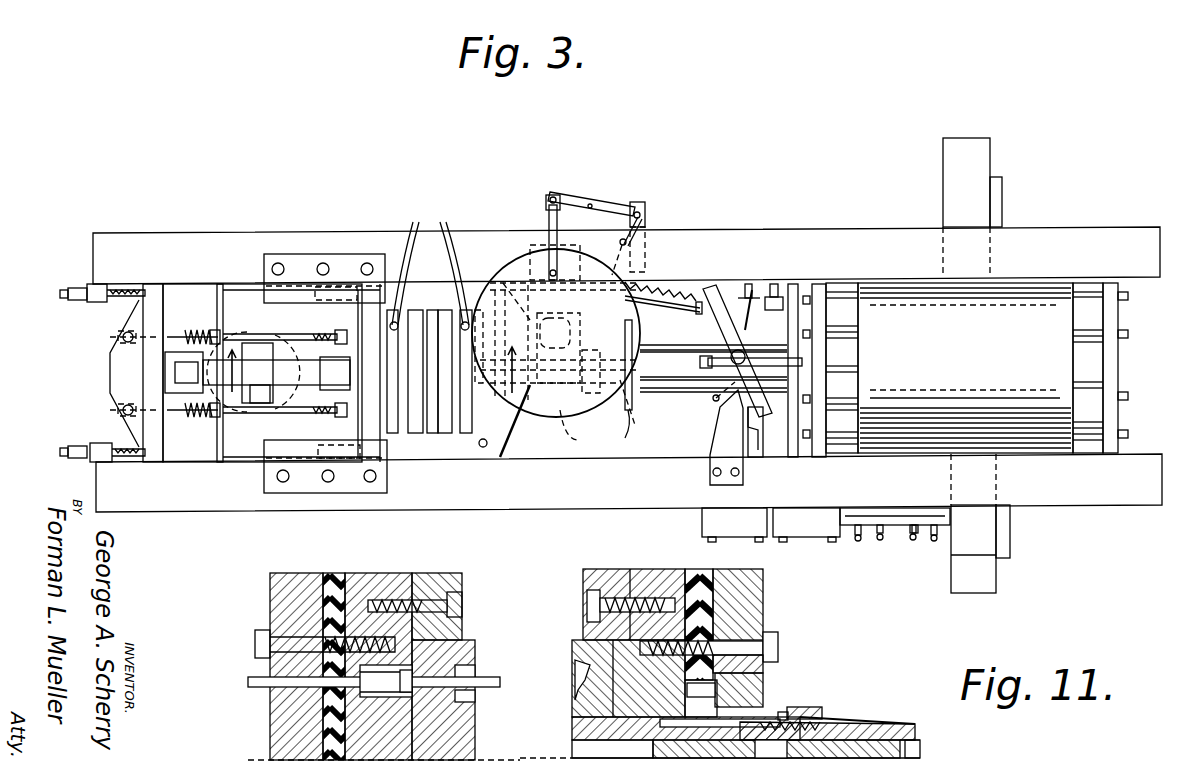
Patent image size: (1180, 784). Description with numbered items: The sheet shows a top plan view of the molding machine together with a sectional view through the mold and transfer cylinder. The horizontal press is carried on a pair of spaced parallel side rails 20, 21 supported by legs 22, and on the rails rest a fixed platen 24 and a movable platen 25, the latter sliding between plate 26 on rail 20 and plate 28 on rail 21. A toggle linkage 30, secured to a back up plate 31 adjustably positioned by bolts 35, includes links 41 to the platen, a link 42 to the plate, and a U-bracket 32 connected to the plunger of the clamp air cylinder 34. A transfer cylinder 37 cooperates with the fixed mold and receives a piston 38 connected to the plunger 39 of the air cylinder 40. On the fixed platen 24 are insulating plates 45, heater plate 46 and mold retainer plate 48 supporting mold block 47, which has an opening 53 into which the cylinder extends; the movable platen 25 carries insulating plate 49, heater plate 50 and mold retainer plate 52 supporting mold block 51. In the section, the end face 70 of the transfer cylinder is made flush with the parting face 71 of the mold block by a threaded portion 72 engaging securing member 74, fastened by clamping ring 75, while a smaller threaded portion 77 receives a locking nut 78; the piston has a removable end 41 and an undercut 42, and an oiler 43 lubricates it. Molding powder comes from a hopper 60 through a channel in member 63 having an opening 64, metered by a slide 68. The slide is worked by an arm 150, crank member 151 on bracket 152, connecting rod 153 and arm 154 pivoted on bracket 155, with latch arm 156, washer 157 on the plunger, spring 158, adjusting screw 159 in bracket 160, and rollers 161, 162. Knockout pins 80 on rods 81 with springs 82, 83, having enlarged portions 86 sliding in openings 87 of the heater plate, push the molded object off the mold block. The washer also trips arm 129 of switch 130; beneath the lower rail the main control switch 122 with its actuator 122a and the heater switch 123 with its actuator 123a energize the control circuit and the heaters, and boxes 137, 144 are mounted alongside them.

In FIG. 3, the side rail 20 is at (1030, 500).
In FIG. 3, the side rail 21 is at (750, 228).
In FIG. 3, the leg 22 is at (968, 140).
In FIG. 3, the fixed platen 24 is at (489, 443).
In FIG. 11, the fixed platen 24 is at (760, 601).
In FIG. 3, the movable platen 25 is at (358, 428).
In FIG. 11, the movable platen 25 is at (285, 620).
In FIG. 3, the plate 26 is at (268, 488).
In FIG. 3, the plate 28 is at (330, 254).
In FIG. 3, the toggle linkage 30 is at (262, 360).
In FIG. 3, the back up plate 31 is at (150, 372).
In FIG. 3, the U-bracket 32 is at (258, 403).
In FIG. 3, the air cylinder 34 is at (237, 345).
In FIG. 3, the bolt 35 is at (97, 302).
In FIG. 3, the transfer cylinder 37 is at (574, 431).
In FIG. 11, the transfer cylinder 37 is at (860, 734).
In FIG. 11, the piston 38 is at (920, 750).
In FIG. 3, the plunger 39 is at (652, 348).
In FIG. 3, the air cylinder 40 is at (977, 368).
In FIG. 3, the removable end 41 is at (276, 372).
In FIG. 11, the removable end 41 is at (653, 750).
In FIG. 3, the undercut 42 is at (232, 395).
In FIG. 11, the undercut 42 is at (915, 726).
In FIG. 3, the oiler 43 is at (618, 408).
In FIG. 11, the insulating plate 45 is at (705, 570).
In FIG. 3, the heater plate 46 is at (468, 434).
In FIG. 11, the heater plate 46 is at (662, 570).
In FIG. 3, the mold block 47 is at (430, 300).
In FIG. 11, the mold block 47 is at (578, 648).
In FIG. 3, the mold retainer plate 48 is at (445, 434).
In FIG. 11, the mold retainer plate 48 is at (583, 578).
In FIG. 11, the insulating plate 49 is at (278, 595).
In FIG. 3, the heater plate 50 is at (408, 250).
In FIG. 11, the heater plate 50 is at (450, 582).
In FIG. 3, the mold block 51 is at (415, 434).
In FIG. 11, the mold block 51 is at (475, 648).
In FIG. 3, the mold retainer plate 52 is at (432, 433).
In FIG. 11, the mold retainer plate 52 is at (465, 630).
In FIG. 11, the opening 53 is at (572, 724).
In FIG. 3, the hopper 60 is at (535, 255).
In FIG. 3, the member 63 is at (580, 332).
In FIG. 3, the opening 64 is at (512, 278).
In FIG. 3, the slide 68 is at (560, 248).
In FIG. 11, the end face 70 is at (562, 742).
In FIG. 11, the parting face 71 is at (572, 700).
In FIG. 11, the threaded portion 72 is at (755, 705).
In FIG. 11, the securing member 74 is at (790, 710).
In FIG. 11, the clamping ring 75 is at (721, 698).
In FIG. 11, the threaded portion 77 is at (820, 728).
In FIG. 11, the nut 78 is at (822, 708).
In FIG. 3, the knockout pin 80 is at (335, 373).
In FIG. 3, the rod 81 is at (292, 337).
In FIG. 11, the rod 81 is at (490, 688).
In FIG. 3, the spring 82 is at (118, 340).
In FIG. 3, the spring 83 is at (186, 330).
In FIG. 11, the enlarged portion 86 is at (395, 700).
In FIG. 11, the enlarged opening 87 is at (330, 690).
In FIG. 3, the main control switch 122 is at (862, 522).
In FIG. 3, the switch actuator 122a is at (880, 534).
In FIG. 3, the heater switch 123 is at (930, 522).
In FIG. 3, the switch actuator 123a is at (915, 536).
In FIG. 3, the switch arm 129 is at (742, 290).
In FIG. 3, the switch 130 is at (778, 295).
In FIG. 3, the control box 137 is at (734, 525).
In FIG. 3, the control box 144 is at (806, 525).
In FIG. 3, the arm 150 is at (548, 205).
In FIG. 3, the crank member 151 is at (580, 197).
In FIG. 3, the bracket 152 is at (647, 216).
In FIG. 3, the connecting rod 153 is at (640, 308).
In FIG. 3, the arm 154 is at (796, 295).
In FIG. 3, the bracket 155 is at (768, 432).
In FIG. 3, the latch arm 156 is at (812, 372).
In FIG. 3, the washer 157 is at (633, 388).
In FIG. 3, the spring 158 is at (655, 284).
In FIG. 3, the adjusting screw 159 is at (714, 400).
In FIG. 3, the bracket 160 is at (710, 445).
In FIG. 3, the roller 161 is at (700, 363).
In FIG. 3, the roller 162 is at (718, 392).